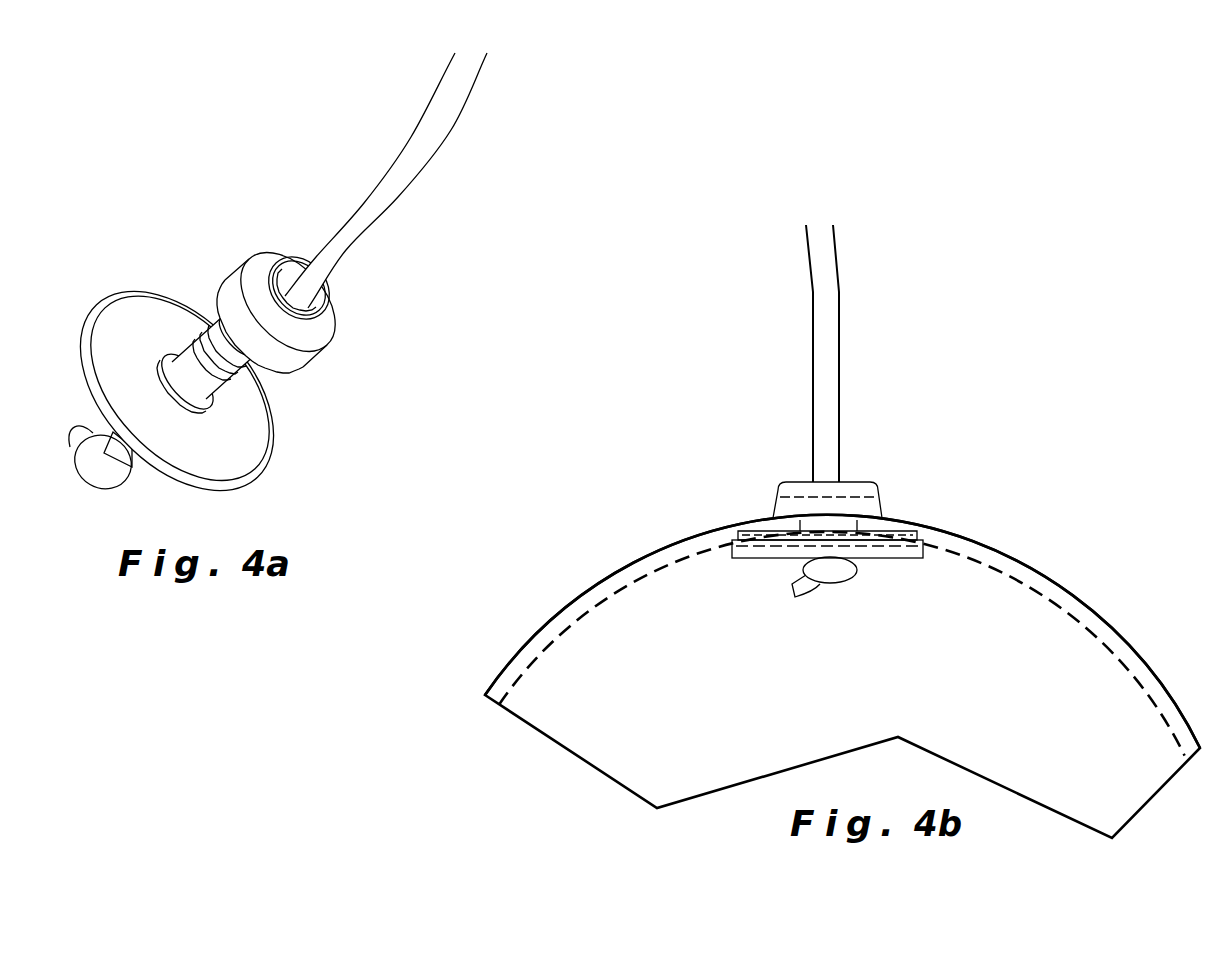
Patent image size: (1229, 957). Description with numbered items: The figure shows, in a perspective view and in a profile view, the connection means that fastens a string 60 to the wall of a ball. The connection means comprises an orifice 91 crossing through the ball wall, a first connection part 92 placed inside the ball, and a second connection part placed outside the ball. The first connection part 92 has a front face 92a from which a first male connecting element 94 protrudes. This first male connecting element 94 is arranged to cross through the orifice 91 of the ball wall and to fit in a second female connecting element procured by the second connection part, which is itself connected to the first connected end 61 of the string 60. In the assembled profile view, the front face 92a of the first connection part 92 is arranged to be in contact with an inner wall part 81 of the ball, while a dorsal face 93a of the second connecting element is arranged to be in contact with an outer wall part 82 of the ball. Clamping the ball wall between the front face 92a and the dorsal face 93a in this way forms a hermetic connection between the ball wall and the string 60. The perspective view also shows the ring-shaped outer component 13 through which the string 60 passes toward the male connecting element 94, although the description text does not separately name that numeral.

In FIG. 4A, the string 60 is at (438, 118).
In FIG. 4B, the string 60 is at (827, 342).
In FIG. 4A, the ring connector 13 is at (320, 336).
In FIG. 4A, the first male connecting element 94 is at (181, 352).
In FIG. 4A, the dorsal face of the second connecting element 93a is at (277, 372).
In FIG. 4A, the front face of the first connection part 92a is at (247, 438).
In FIG. 4A, the first connection part 92 is at (237, 488).
In FIG. 4B, the first connection part 92 is at (893, 558).
In FIG. 4B, the first connected end of the string 61 is at (840, 482).
In FIG. 4B, the orifice 91 is at (868, 500).
In FIG. 4B, the outer wall part of the ball 82 is at (925, 527).
In FIG. 4B, the inner wall part of the ball 81 is at (1097, 637).